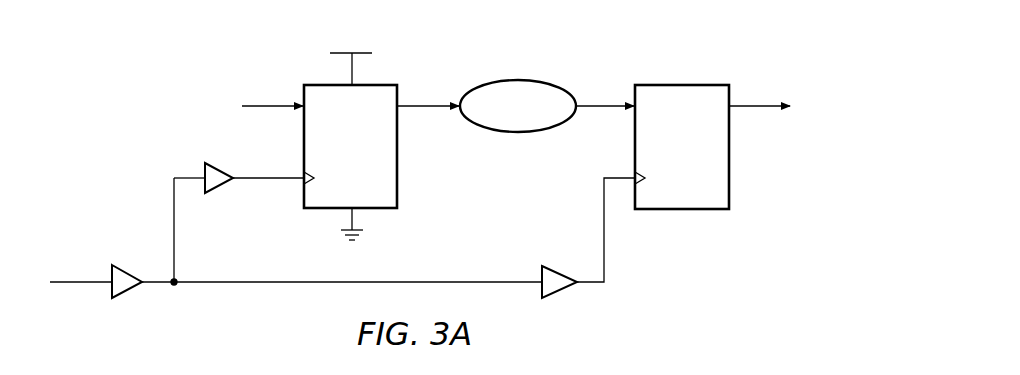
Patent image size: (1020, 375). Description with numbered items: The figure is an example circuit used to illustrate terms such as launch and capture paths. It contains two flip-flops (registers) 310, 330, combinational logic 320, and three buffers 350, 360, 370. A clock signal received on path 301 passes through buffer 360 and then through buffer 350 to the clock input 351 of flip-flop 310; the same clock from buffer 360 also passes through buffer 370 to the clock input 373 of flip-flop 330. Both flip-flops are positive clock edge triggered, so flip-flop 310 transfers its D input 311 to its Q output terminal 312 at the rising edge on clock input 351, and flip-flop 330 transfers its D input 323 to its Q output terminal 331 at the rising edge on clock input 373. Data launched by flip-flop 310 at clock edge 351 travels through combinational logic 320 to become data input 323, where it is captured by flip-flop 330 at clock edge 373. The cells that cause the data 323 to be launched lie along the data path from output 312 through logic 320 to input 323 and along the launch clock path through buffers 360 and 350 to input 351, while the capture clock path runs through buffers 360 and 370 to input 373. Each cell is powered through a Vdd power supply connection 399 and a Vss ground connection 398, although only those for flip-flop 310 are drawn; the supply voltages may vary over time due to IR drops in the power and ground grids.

The clock signal path 301 is at (85, 284).
The buffer 360 is at (130, 291).
The buffer 350 is at (222, 171).
The clock input 351 is at (273, 180).
The flip-flop 310 is at (398, 158).
The data input 311 is at (280, 103).
The output terminal 312 is at (436, 103).
The power supply connection 399 is at (342, 52).
The ground connection 398 is at (362, 236).
The combinational logic 320 is at (516, 80).
The data input 323 is at (600, 103).
The flip-flop 330 is at (730, 156).
The output terminal 331 is at (754, 103).
The buffer 370 is at (559, 293).
The clock input 373 is at (605, 250).